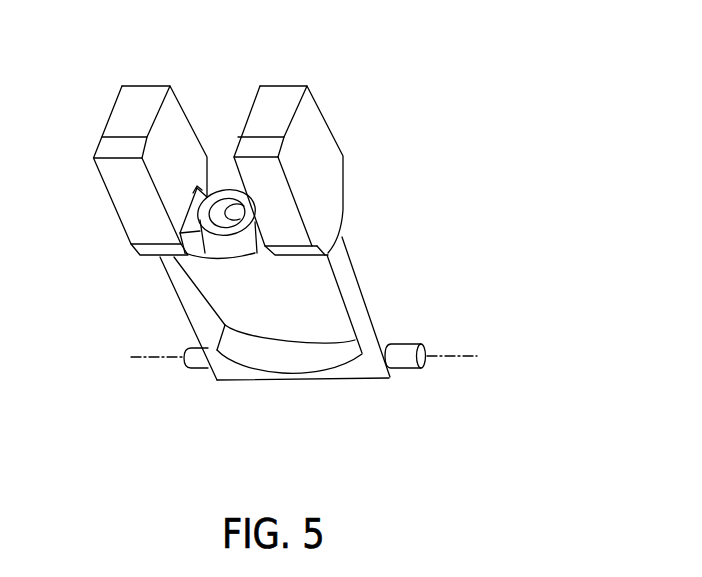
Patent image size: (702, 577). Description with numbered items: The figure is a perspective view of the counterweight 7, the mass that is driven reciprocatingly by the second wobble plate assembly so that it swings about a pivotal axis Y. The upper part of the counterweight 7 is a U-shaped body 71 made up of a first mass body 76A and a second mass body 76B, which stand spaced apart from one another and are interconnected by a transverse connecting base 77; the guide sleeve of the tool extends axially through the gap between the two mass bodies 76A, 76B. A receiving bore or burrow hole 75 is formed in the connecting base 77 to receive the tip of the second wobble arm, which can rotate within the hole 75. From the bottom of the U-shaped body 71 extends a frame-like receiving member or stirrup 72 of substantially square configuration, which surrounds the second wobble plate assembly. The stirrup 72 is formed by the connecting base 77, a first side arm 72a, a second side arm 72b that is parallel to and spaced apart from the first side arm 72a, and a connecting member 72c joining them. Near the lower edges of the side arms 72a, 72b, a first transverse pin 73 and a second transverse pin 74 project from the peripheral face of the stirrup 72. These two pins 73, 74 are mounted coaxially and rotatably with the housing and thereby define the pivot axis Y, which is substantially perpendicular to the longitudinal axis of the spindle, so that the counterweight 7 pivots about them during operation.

The counterweight 7 is at (367, 70).
The U-shaped body 71 is at (219, 103).
The stirrup 72 is at (300, 390).
The first side arm 72a is at (190, 318).
The second side arm 72b is at (375, 326).
The connecting member 72c is at (361, 367).
The first transverse pin 73 is at (399, 357).
The second transverse pin 74 is at (197, 368).
The receiving bore 75 is at (236, 207).
The first mass body 76A is at (128, 192).
The second mass body 76B is at (332, 182).
The transverse connecting base 77 is at (229, 255).
The pivotal axis Y is at (463, 360).